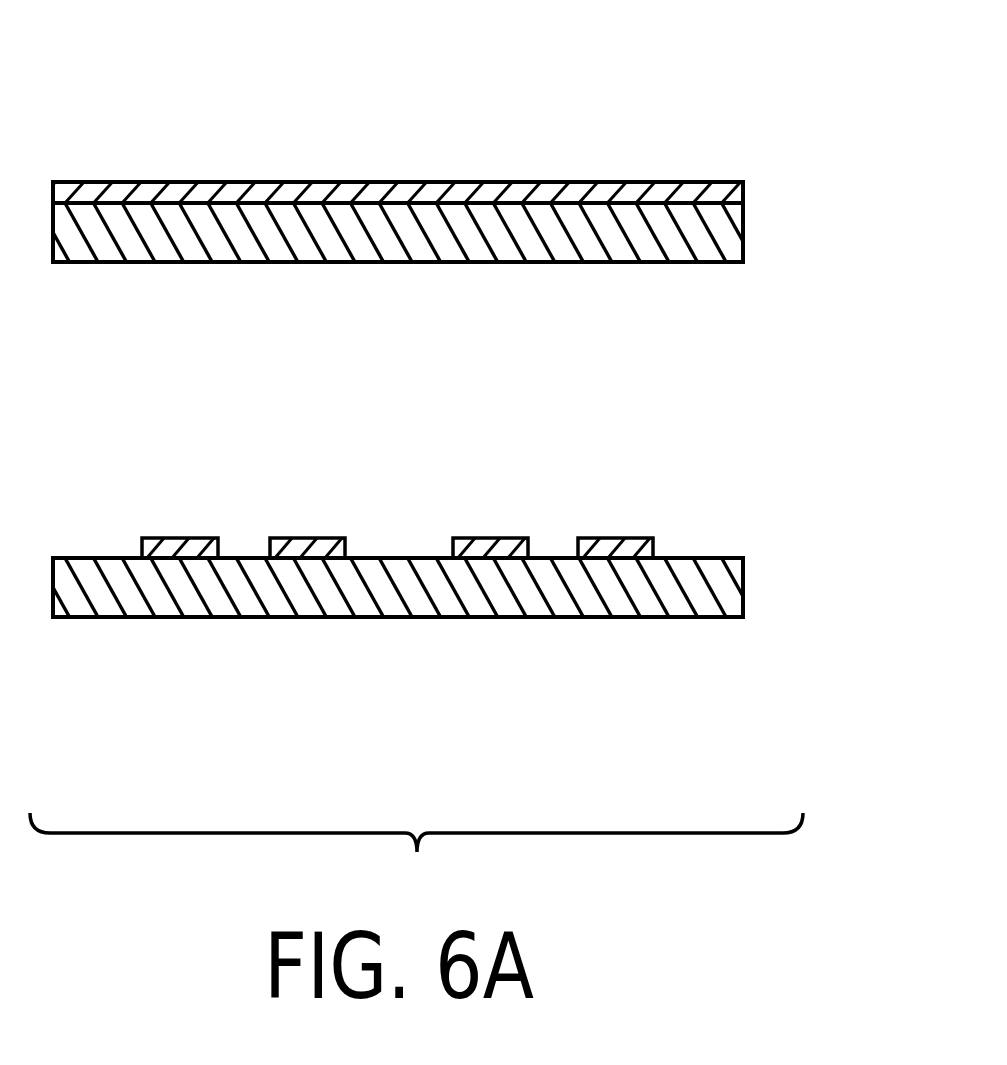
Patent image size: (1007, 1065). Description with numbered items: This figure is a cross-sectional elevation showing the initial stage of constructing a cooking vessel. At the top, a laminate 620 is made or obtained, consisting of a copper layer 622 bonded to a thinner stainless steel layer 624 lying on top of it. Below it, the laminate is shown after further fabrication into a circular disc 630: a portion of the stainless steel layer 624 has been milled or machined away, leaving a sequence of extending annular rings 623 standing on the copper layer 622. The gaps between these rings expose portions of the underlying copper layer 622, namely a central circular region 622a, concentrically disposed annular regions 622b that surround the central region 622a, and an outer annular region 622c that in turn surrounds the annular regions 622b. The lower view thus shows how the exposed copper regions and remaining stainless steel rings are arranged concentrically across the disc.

The laminate 620 is at (390, 131).
The copper layer 622 is at (743, 232).
The stainless steel layer 624 is at (92, 182).
The circular disc 630 is at (414, 462).
The extending annular rings 623 is at (155, 537).
The central circular region 622a is at (455, 528).
The concentrically disposed annular regions 622b is at (273, 528).
The outer annular region 622c is at (145, 528).